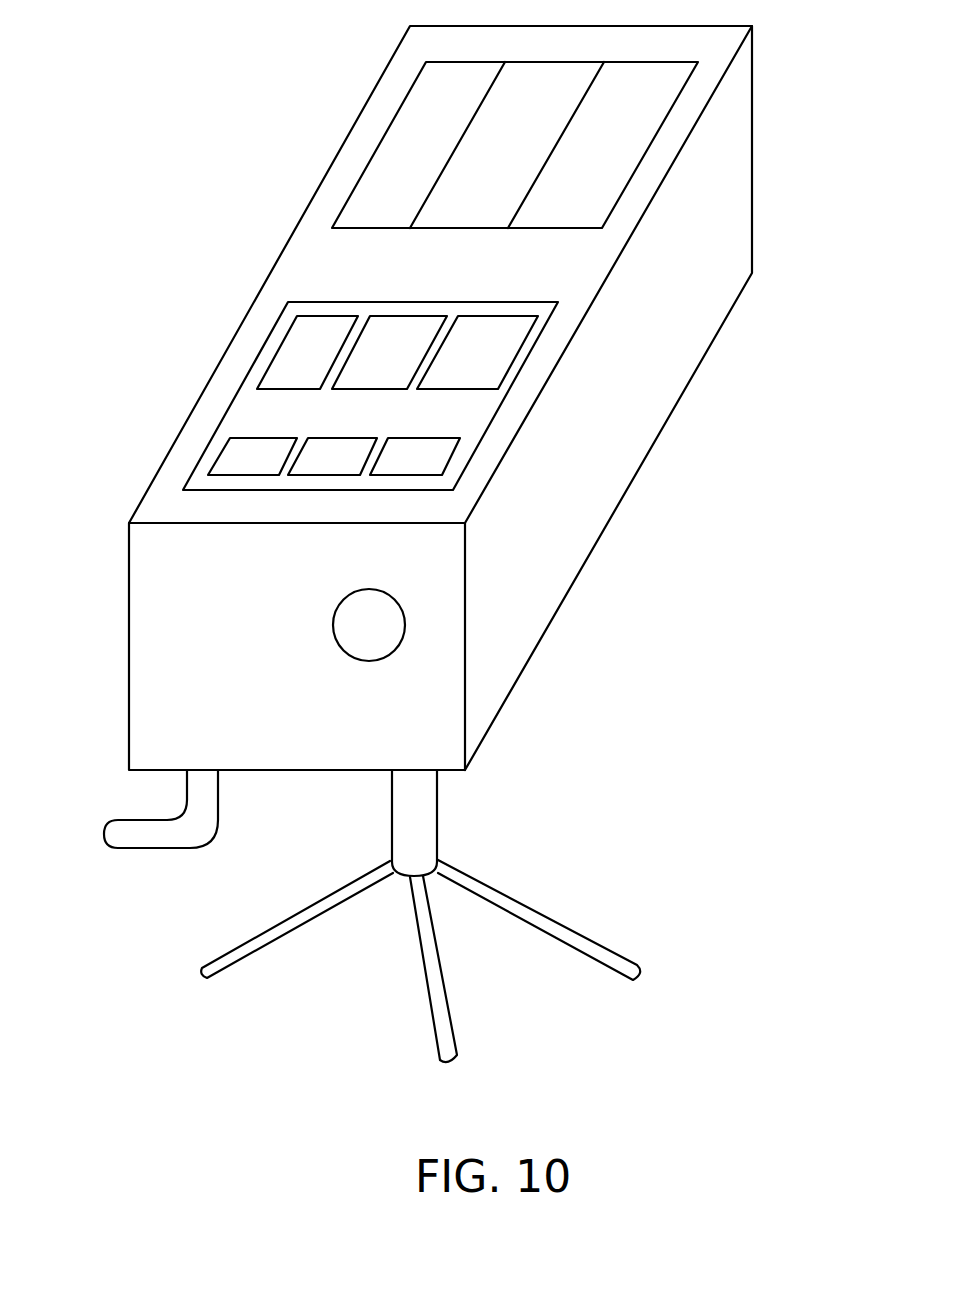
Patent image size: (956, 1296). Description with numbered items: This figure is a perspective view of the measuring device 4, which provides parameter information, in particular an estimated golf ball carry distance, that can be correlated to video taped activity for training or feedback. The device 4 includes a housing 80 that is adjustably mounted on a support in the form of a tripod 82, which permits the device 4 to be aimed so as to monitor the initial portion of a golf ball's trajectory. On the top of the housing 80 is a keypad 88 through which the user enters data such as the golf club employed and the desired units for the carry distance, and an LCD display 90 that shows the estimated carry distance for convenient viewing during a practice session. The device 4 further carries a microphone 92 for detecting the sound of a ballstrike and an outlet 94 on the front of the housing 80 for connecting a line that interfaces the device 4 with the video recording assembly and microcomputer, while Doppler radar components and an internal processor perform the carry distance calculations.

The measuring device 4 is at (755, 471).
The housing 80 is at (679, 305).
The tripod 82 is at (457, 865).
The keypad 88 is at (472, 425).
The LCD display 90 is at (388, 163).
The microphone 92 is at (150, 850).
The outlet 94 is at (372, 651).